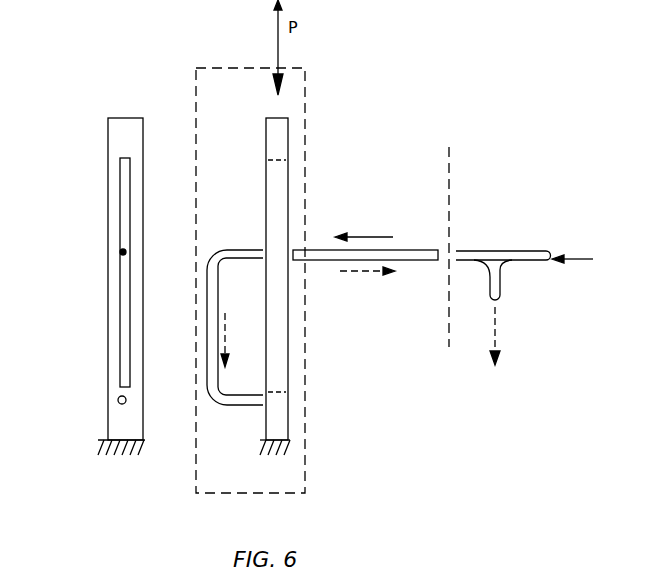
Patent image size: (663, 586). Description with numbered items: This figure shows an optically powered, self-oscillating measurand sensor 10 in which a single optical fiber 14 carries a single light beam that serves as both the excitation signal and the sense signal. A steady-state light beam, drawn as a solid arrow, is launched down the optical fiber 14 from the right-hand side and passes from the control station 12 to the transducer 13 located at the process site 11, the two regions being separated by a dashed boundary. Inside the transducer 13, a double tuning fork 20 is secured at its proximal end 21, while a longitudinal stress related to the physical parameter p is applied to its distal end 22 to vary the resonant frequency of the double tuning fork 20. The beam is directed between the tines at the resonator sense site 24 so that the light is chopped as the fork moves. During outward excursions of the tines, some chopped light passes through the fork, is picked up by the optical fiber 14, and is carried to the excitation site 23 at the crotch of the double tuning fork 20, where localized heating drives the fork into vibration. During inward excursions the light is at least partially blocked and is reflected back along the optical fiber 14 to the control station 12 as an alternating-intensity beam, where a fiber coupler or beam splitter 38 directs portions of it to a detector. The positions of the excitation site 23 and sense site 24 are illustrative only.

The measurand sensor 10 is at (418, 132).
The process site 11 is at (384, 342).
The control station 12 is at (547, 345).
The transducer 13 is at (305, 488).
The optical fiber 14 is at (222, 266).
The double tuning fork 20 is at (143, 185).
The proximal end 21 is at (155, 441).
The distal end 22 is at (257, 128).
The excitation site 23 is at (150, 412).
The resonator sense site 24 is at (256, 240).
The fiber coupler or beam splitter 38 is at (500, 250).